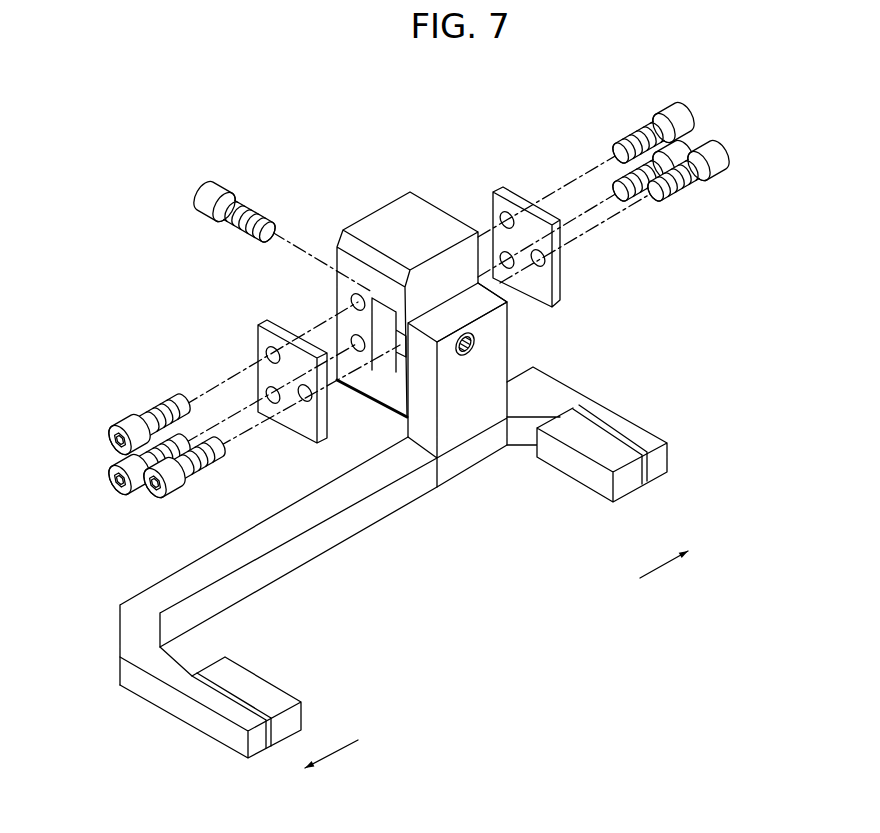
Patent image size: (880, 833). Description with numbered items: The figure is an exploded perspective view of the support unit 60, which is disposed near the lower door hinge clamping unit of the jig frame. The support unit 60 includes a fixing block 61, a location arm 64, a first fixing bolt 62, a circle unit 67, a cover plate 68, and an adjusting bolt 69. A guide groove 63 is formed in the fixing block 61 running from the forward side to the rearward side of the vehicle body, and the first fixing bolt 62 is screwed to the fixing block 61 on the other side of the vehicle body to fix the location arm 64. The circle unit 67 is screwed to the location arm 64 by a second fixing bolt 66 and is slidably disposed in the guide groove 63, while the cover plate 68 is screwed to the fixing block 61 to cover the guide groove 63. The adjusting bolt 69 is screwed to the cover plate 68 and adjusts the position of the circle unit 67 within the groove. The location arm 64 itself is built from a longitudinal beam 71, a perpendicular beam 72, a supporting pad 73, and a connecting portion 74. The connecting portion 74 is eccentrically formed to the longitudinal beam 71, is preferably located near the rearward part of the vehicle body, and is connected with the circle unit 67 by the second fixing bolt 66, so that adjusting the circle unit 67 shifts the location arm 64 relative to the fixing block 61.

The support unit 60 is at (430, 80).
The fixing block 61 is at (396, 210).
The first fixing bolt 62 is at (200, 190).
The guide groove 63 is at (348, 296).
The location arm 64 is at (352, 549).
The second fixing bolt 66 is at (478, 344).
The circle unit 67 is at (390, 330).
The cover plate 68 is at (258, 347).
The adjusting bolt 69 is at (716, 150).
The longitudinal beam 71 is at (404, 493).
The perpendicular beam 72 is at (172, 668).
The supporting pad 73 is at (275, 699).
The connecting portion 74 is at (505, 318).